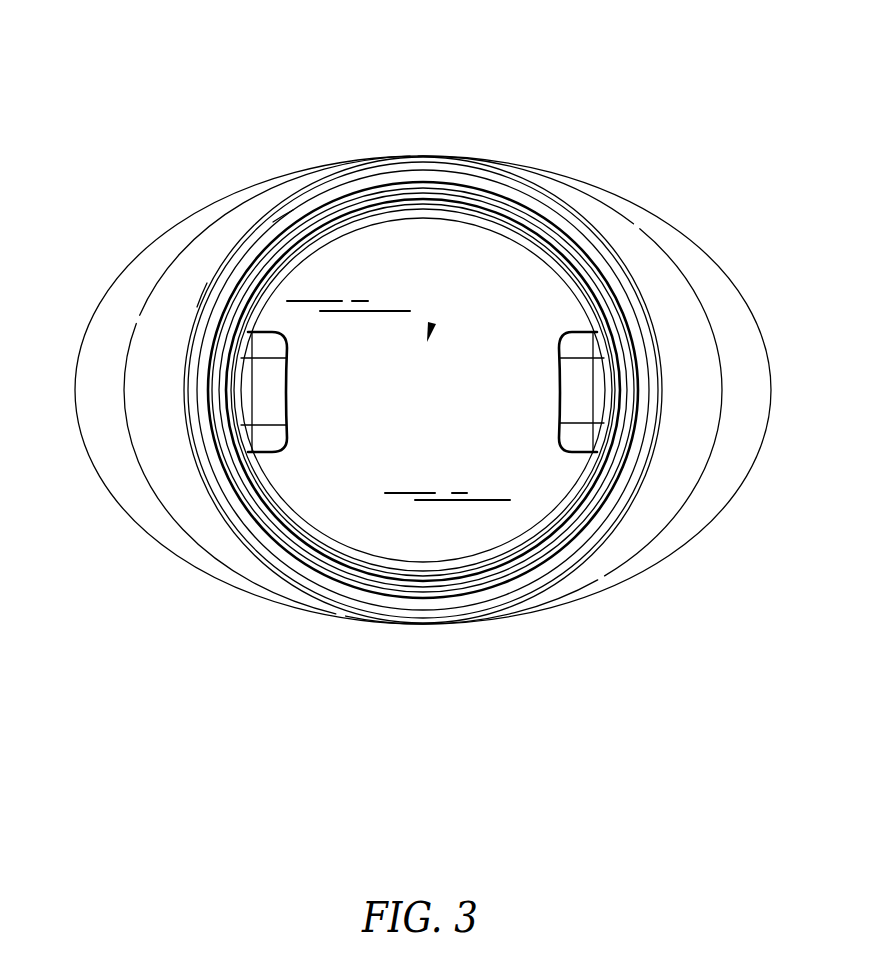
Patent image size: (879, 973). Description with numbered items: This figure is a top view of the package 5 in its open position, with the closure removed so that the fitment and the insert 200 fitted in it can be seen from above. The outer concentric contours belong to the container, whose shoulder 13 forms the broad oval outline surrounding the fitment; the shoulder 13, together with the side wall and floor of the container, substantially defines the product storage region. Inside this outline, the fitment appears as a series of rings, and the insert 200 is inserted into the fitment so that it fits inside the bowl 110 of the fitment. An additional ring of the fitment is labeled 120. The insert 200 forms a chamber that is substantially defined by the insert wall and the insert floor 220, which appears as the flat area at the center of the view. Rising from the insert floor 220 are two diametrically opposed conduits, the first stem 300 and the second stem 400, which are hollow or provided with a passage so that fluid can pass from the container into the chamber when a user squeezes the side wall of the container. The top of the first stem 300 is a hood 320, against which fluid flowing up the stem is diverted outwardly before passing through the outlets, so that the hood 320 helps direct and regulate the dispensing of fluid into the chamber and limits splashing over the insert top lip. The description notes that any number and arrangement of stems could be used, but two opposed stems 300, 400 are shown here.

The package 5 is at (117, 95).
The shoulder 13 is at (680, 460).
The bowl 110 is at (318, 226).
The outer ring 120 is at (481, 182).
The insert 200 is at (313, 238).
The insert floor 220 is at (408, 447).
The first stem 300 is at (268, 394).
The hood 320 is at (433, 323).
The second stem 400 is at (576, 378).